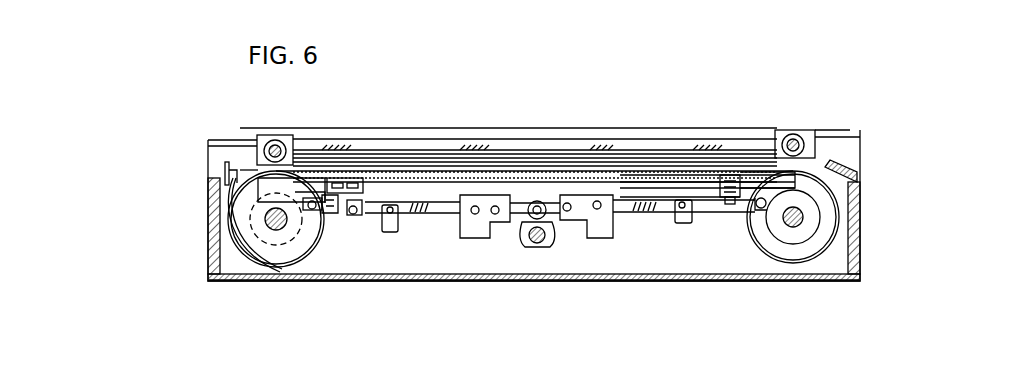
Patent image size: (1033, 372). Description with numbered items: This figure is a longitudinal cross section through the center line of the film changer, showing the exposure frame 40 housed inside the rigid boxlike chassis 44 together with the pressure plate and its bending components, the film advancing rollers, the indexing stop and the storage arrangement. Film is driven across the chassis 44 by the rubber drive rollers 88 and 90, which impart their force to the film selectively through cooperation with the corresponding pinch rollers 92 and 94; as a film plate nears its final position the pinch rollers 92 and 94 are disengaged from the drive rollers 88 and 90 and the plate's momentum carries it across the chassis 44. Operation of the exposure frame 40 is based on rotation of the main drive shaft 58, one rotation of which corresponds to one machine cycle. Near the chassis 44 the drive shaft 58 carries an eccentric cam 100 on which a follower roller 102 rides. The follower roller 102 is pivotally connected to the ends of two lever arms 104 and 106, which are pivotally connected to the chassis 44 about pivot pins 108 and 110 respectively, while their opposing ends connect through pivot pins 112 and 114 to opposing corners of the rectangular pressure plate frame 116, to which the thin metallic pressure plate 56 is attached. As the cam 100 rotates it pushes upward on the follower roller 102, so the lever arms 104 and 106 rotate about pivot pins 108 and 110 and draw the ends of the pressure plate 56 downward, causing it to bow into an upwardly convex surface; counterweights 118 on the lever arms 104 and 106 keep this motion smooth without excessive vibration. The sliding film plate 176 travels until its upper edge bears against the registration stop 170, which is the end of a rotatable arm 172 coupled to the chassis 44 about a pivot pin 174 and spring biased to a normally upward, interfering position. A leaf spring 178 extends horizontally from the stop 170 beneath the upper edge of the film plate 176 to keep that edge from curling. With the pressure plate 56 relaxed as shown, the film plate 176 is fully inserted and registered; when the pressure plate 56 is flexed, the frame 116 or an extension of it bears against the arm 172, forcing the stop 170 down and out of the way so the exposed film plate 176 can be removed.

The exposure frame 40 is at (747, 282).
The chassis 44 is at (850, 243).
The pressure plate 56 is at (610, 181).
The main driveshaft 58 is at (545, 240).
The drive roller 88 is at (832, 278).
The drive roller 90 is at (273, 268).
The pinch roller 92 is at (800, 132).
The pinch roller 94 is at (275, 150).
The eccentric cam 100 is at (526, 254).
The follower roller 102 is at (538, 200).
The lever arm 104 is at (686, 201).
The lever arm 106 is at (433, 207).
The pivot pin 108 is at (726, 176).
The pivot pin 110 is at (390, 207).
The pivot pin 112 is at (762, 208).
The pivot pin 114 is at (313, 210).
The pressure plate frame 116 is at (267, 182).
The counterweights 118 is at (468, 240).
The registration stop 170 is at (226, 166).
The rotatable arm 172 is at (313, 253).
The pivot pin 174 is at (353, 213).
The film plate 176 is at (238, 167).
The leaf spring 178 is at (230, 197).